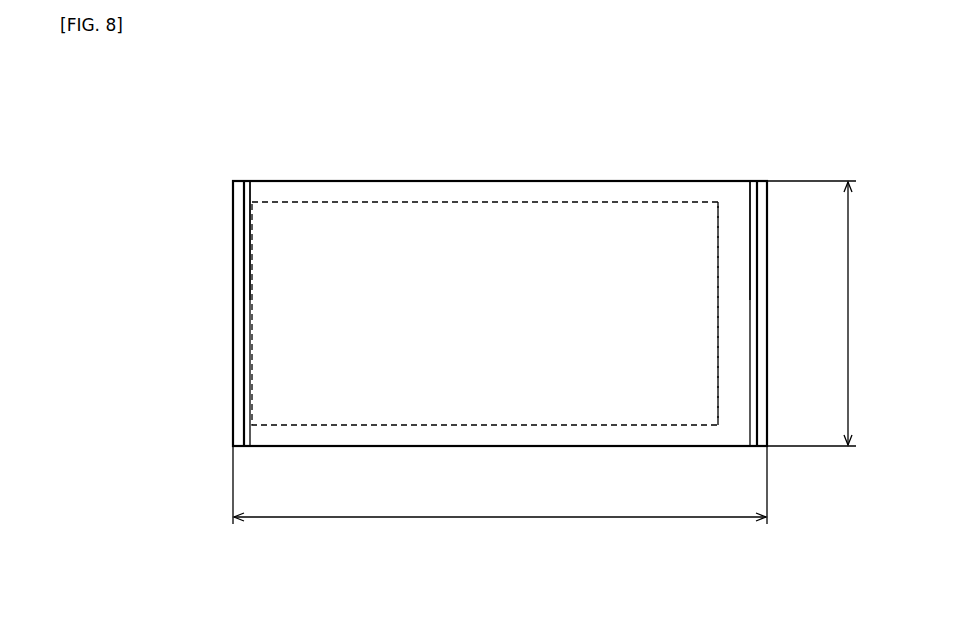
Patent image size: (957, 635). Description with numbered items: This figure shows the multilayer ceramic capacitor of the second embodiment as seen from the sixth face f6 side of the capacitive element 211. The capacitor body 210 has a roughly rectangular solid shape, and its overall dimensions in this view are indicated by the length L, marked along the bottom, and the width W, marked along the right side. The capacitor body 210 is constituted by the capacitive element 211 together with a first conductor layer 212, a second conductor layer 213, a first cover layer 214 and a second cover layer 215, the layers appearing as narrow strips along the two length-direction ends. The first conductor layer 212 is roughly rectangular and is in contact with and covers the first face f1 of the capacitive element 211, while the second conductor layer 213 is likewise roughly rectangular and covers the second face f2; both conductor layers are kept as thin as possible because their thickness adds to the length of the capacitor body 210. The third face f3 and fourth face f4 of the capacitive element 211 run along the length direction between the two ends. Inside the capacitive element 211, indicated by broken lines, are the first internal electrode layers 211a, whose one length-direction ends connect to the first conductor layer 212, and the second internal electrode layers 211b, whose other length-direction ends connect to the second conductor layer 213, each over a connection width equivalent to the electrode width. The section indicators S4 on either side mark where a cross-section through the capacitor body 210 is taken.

The capacitor body 210 is at (246, 180).
The capacitive element 211 is at (493, 180).
The first internal electrode layer 211a is at (594, 221).
The second internal electrode layer 211b is at (735, 205).
The first conductor layer 212 is at (248, 241).
The second conductor layer 213 is at (757, 239).
The first cover layer 214 is at (239, 272).
The second cover layer 215 is at (762, 272).
The first face f1 is at (250, 193).
The second face f2 is at (750, 195).
The third face f3 is at (451, 447).
The fourth face f4 is at (450, 180).
The sixth face f6 is at (537, 253).
The section line S4 is at (229, 312).
The width W is at (818, 313).
The length L is at (500, 496).